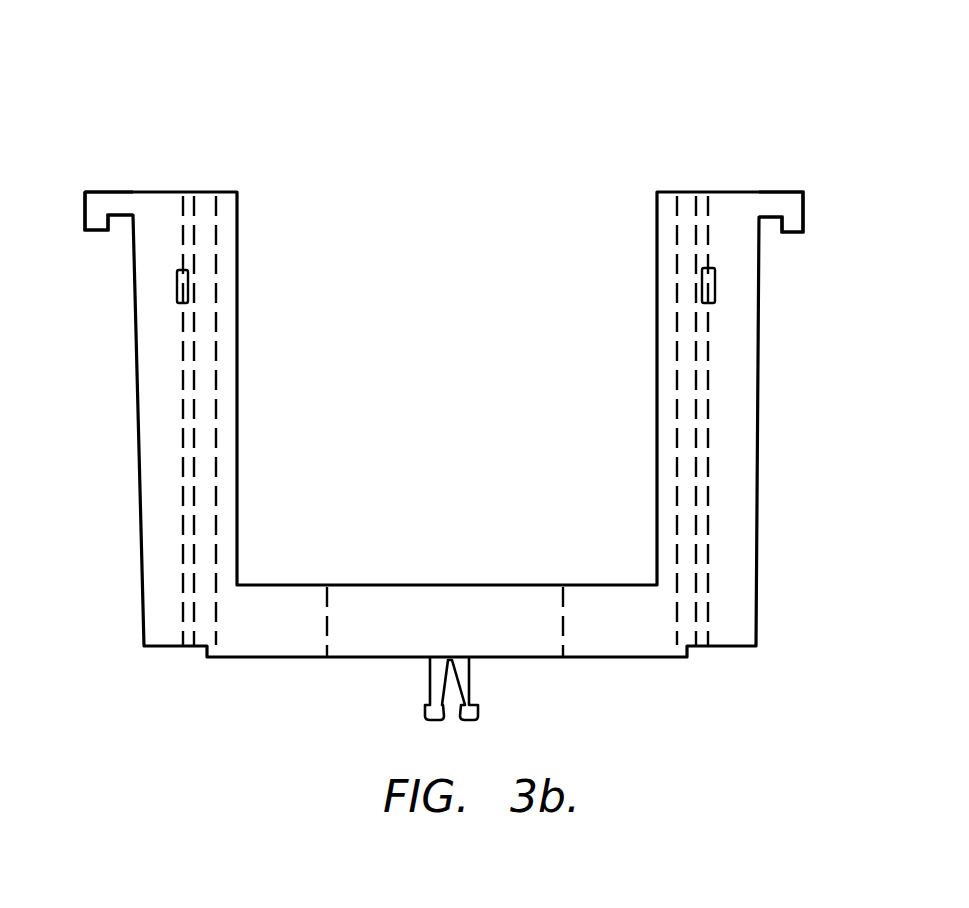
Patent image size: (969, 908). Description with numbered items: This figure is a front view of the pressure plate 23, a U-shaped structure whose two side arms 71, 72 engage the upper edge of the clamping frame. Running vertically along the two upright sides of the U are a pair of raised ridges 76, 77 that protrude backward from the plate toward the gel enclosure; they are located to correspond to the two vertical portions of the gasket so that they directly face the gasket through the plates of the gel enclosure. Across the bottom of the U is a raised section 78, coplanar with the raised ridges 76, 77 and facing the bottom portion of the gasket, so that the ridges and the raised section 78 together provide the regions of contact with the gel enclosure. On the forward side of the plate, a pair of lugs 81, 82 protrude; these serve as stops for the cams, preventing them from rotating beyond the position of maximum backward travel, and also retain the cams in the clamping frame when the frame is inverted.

The pressure plate 23 is at (788, 97).
The side arm 71 is at (108, 192).
The side arm 72 is at (772, 192).
The raised ridge 76 is at (203, 250).
The raised ridge 77 is at (685, 255).
The raised section 78 is at (465, 617).
The lug 81 is at (177, 286).
The lug 82 is at (717, 285).